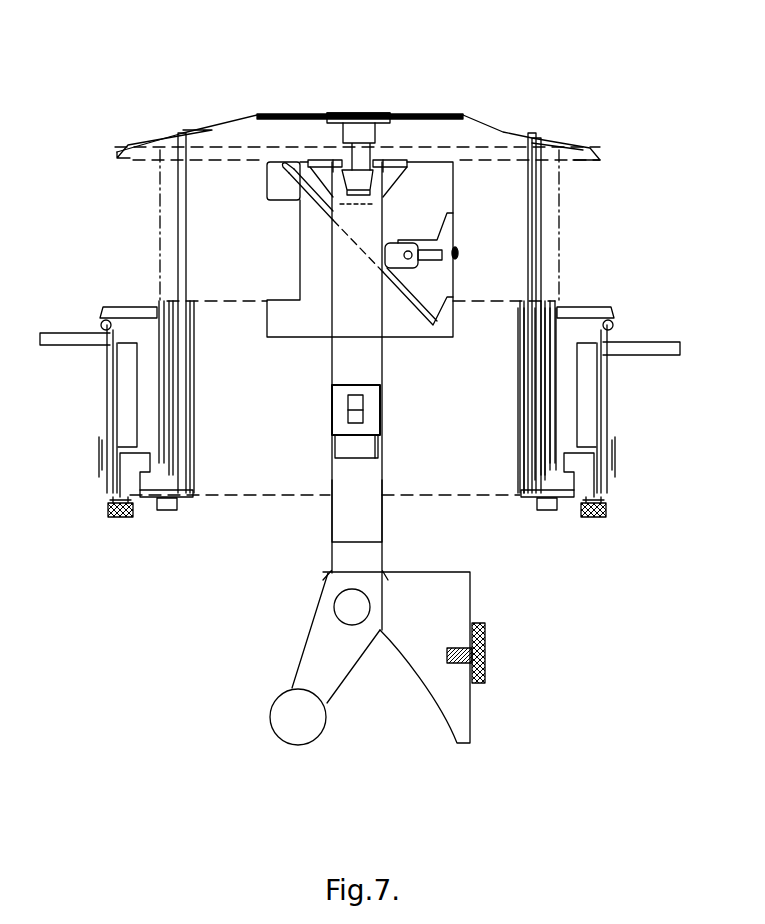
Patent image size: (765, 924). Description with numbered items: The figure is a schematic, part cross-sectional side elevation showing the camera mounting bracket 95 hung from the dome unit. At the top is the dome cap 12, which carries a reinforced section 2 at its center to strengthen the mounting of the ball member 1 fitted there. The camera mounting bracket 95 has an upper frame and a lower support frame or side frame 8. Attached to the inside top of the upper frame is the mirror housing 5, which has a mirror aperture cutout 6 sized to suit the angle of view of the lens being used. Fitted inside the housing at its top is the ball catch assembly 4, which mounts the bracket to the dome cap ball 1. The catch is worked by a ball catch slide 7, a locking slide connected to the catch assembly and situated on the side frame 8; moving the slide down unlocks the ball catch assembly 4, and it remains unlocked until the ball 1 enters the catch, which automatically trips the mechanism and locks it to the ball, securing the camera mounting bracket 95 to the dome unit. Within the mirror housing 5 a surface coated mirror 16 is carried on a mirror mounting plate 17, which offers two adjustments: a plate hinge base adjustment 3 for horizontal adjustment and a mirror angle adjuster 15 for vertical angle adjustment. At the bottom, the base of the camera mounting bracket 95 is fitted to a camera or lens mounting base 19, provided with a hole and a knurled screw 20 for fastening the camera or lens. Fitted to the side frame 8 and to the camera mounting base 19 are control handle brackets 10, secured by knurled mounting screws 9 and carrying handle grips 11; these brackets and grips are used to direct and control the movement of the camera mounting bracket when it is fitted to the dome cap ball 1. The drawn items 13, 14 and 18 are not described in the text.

The ball member 1 is at (360, 132).
The reinforced section 2 is at (290, 113).
The plate hinge base adjustment 3 is at (300, 165).
The ball catch assembly 4 is at (300, 202).
The mirror housing 5 is at (318, 255).
The mirror aperture cutout 6 is at (280, 285).
The ball catch slide 7 is at (342, 413).
The side frame 8 is at (350, 495).
The knurled mounting screws 9 is at (352, 607).
The control handle brackets 10 is at (323, 662).
The handle grips 11 is at (298, 717).
The dome cap 12 is at (465, 140).
The rod 13 is at (537, 197).
The axis line 14 is at (558, 227).
The mirror angle adjuster 15 is at (460, 255).
The surface coated mirror 16 is at (392, 279).
The mirror mounting plate 17 is at (455, 297).
The clamp bracket 18 is at (568, 402).
The camera or lens mounting base 19 is at (428, 607).
The knurled screw 20 is at (485, 657).
The camera mounting bracket 95 is at (322, 410).